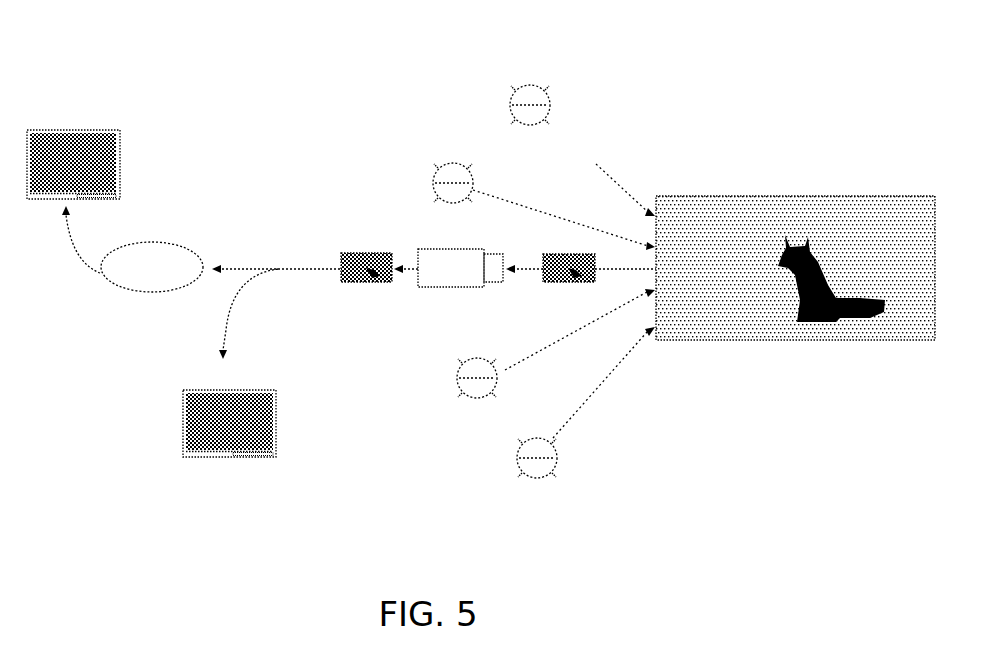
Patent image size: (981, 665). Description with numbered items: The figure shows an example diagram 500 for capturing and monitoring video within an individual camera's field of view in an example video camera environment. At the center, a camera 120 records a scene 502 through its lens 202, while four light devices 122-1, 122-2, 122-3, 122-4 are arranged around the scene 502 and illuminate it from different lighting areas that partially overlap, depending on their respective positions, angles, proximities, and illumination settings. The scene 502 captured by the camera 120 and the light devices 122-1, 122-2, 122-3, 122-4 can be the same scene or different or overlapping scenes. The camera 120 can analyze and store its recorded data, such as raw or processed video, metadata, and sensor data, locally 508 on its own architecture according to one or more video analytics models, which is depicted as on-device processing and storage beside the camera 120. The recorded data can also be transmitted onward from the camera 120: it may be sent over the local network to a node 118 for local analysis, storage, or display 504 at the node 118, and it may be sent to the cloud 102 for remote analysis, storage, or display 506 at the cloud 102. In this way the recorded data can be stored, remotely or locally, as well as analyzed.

The example diagram 500 is at (706, 36).
The remote analysis, storage, or display 506 is at (72, 143).
The cloud 102 is at (152, 275).
The local analysis and storage 508 is at (366, 255).
The camera 120 is at (463, 277).
The lens 202 is at (490, 283).
The light device 122-1 is at (570, 139).
The light device 122-2 is at (533, 194).
The light device 122-3 is at (545, 343).
The light device 122-4 is at (565, 402).
The scene 502 is at (800, 196).
The node 118 is at (182, 398).
The local analysis, storage, or display 504 is at (206, 446).